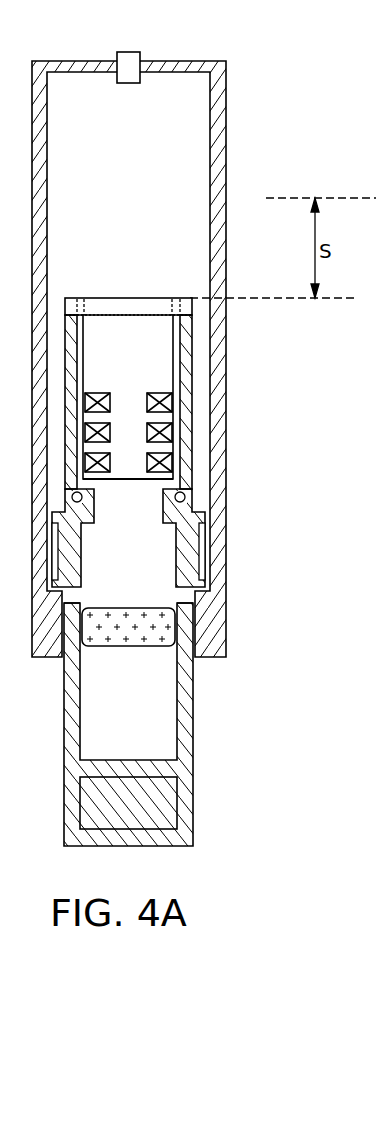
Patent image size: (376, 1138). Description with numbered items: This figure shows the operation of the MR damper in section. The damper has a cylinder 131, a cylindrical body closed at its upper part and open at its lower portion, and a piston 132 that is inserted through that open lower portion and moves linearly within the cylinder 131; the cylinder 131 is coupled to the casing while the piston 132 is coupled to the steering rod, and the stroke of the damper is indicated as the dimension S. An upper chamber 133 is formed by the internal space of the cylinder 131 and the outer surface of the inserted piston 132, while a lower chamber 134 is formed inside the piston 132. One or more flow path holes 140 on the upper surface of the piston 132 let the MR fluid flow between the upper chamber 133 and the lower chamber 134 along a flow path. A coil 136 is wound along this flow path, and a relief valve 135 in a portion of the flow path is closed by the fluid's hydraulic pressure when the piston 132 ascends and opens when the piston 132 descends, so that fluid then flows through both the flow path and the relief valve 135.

The cylinder 131 is at (190, 62).
The piston 132 is at (193, 699).
The upper chamber 133 is at (136, 113).
The lower chamber 134 is at (115, 561).
The relief valve 135 is at (181, 493).
The coil 136 is at (173, 378).
The flow path hole 140 is at (177, 304).